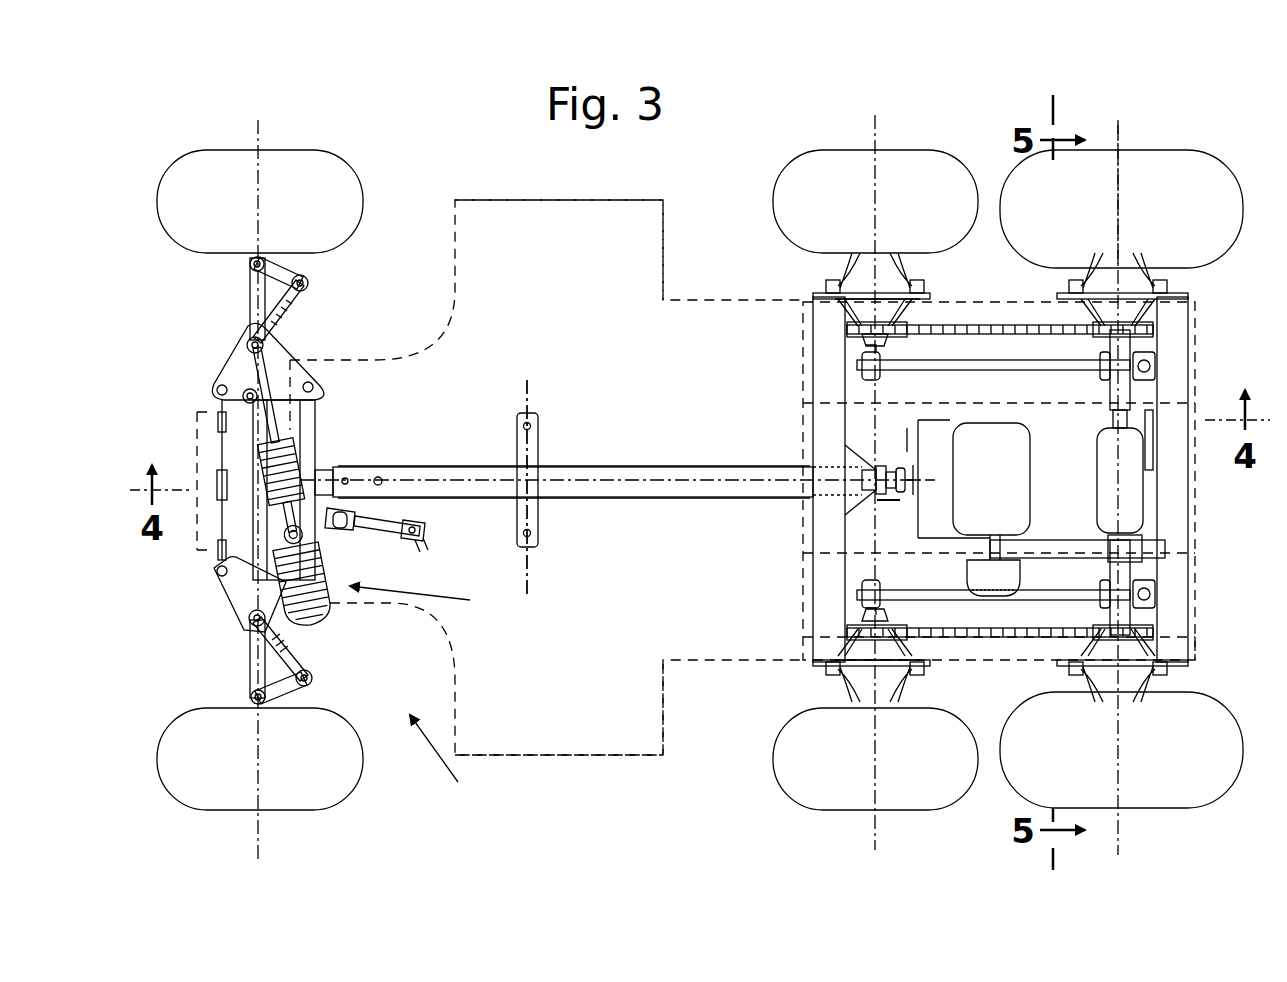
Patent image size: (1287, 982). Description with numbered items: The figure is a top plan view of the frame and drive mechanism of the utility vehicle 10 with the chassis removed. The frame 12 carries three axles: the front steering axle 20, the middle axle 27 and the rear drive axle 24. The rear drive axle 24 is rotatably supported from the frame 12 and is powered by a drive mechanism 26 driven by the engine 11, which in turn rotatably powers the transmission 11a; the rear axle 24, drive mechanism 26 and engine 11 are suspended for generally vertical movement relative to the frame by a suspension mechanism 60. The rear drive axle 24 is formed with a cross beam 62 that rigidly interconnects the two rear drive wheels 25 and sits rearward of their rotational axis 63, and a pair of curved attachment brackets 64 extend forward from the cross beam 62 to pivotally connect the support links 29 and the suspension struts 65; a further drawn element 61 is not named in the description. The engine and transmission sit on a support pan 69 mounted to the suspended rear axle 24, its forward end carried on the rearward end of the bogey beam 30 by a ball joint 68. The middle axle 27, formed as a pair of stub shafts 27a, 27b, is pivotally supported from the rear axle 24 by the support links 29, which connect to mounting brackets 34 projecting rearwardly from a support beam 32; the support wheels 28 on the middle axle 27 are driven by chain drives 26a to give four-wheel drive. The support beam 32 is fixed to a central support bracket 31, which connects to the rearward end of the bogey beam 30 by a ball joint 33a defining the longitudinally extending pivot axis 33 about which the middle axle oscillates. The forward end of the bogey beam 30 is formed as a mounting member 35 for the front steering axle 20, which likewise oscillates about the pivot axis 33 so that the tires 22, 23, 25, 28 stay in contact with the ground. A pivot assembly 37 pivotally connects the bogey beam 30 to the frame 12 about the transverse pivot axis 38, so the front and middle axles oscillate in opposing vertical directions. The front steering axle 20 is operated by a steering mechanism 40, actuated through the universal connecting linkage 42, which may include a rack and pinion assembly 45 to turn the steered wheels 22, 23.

The utility vehicle 10 is at (414, 130).
The engine 11 is at (1032, 465).
The transmission 11a is at (1097, 480).
The frame 12 is at (600, 757).
The front steering axle 20 is at (250, 305).
The steered wheel 22 is at (215, 150).
The steered wheel 23 is at (285, 810).
The rear drive axle 24 is at (1140, 578).
The rear drive wheel 25 is at (1225, 165).
The drive mechanism 26 is at (1040, 568).
The chain drive 26a is at (953, 322).
The middle axle 27 is at (875, 177).
The stub shaft 27a is at (838, 282).
The stub shaft 27b is at (838, 675).
The support wheel 28 is at (855, 150).
The support link 29 is at (992, 362).
The bogey beam 30 is at (438, 467).
The central support bracket 31 is at (870, 465).
The support beam 32 is at (813, 452).
The longitudinally extending pivot axis 33 is at (628, 482).
The ball joint 33a is at (873, 495).
The mounting bracket 34 is at (858, 356).
The mounting member 35 is at (317, 425).
The pivot assembly 37 is at (540, 425).
The transverse pivot axis 38 is at (527, 578).
The steering mechanism 40 is at (453, 765).
The universal connecting linkage 42 is at (425, 538).
The rack and pinion assembly 45 is at (430, 601).
The suspension mechanism 60 is at (1218, 304).
The frame bracket 61 is at (1157, 445).
The cross beam 62 is at (1195, 642).
The rotational axis 63 is at (1120, 185).
The attachment bracket 64 is at (1167, 380).
The suspension strut 65 is at (1157, 372).
The ball joint 68 is at (908, 452).
The support pan 69 is at (918, 538).